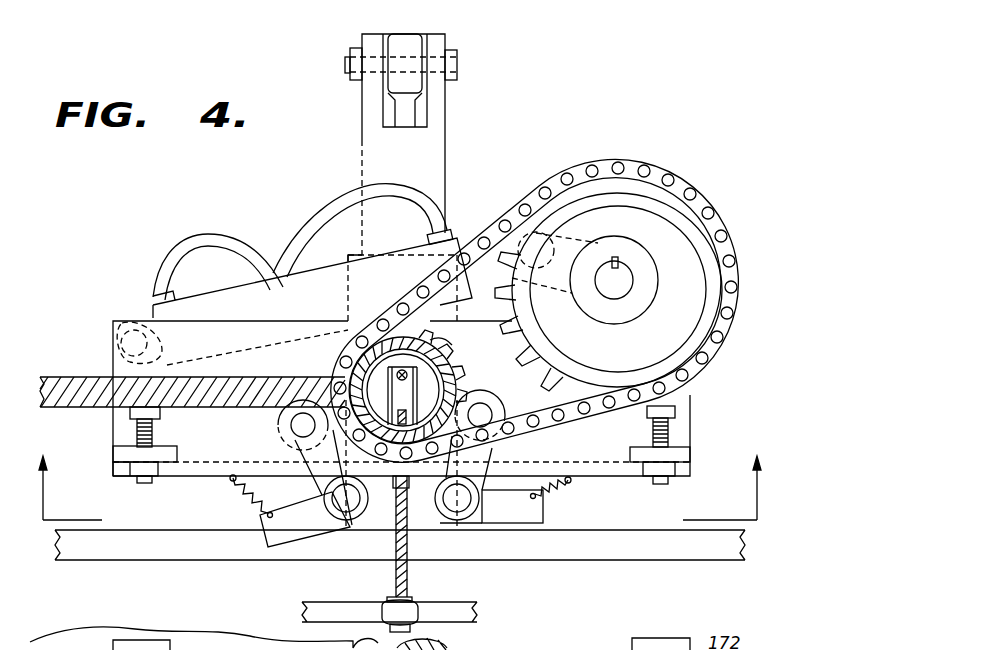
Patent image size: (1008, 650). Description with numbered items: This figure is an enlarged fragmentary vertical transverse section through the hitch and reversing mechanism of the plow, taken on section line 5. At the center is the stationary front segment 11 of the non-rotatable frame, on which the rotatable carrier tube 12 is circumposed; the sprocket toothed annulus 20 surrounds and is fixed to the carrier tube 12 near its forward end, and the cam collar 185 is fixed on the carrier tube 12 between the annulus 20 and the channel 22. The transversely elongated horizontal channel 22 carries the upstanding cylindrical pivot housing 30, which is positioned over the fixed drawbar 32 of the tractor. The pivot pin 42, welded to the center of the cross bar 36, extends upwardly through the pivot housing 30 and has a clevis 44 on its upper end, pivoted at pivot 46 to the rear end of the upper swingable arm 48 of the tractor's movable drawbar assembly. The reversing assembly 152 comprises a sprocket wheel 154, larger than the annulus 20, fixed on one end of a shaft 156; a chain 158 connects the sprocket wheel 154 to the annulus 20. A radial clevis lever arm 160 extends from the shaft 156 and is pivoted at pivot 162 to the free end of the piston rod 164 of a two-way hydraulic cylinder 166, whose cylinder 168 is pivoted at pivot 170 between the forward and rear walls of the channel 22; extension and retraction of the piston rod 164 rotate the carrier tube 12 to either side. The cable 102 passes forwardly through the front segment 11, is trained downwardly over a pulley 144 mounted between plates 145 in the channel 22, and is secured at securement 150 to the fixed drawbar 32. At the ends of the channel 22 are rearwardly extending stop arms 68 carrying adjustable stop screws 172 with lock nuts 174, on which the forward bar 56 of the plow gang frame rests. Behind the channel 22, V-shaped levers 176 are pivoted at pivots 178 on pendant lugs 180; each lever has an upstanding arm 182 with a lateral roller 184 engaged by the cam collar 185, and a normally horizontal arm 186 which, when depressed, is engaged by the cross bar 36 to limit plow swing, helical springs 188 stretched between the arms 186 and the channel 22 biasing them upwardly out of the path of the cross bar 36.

The clevis 44 is at (372, 34).
The upper swingable arm 48 is at (407, 40).
The pivot 46 is at (458, 63).
The pivot pin 42 is at (362, 143).
The two-way hydraulic cylinder 166 is at (336, 263).
The cylinder 168 is at (237, 292).
The pivot housing 30 is at (372, 256).
The channel 22 is at (105, 364).
The pivot 170 is at (137, 330).
The plates 145 is at (345, 343).
The forward bar 56 is at (45, 377).
The sprocket wheel 154 is at (700, 205).
The shaft 156 is at (632, 282).
The pivot 162 is at (560, 232).
The radial clevis lever arm 160 is at (585, 245).
The piston rod 164 is at (492, 286).
The reversing assembly 152 is at (504, 192).
The chain 158 is at (480, 236).
The cam collar 185 is at (350, 330).
The sprocket toothed annulus 20 is at (455, 340).
The carrier tube 12 is at (458, 358).
The front segment 11 is at (462, 378).
The pulley 144 is at (409, 392).
The lateral rollers 184 is at (292, 420).
The upstanding arms 182 is at (312, 470).
The V-shaped levers 176 is at (293, 460).
The stop screws 172 is at (160, 438).
The stop arms 68 is at (118, 455).
The lock nuts 174 is at (165, 478).
The helical springs 188 is at (248, 496).
The normally horizontal arms 186 is at (275, 548).
The pivot 178 is at (348, 522).
The pendant lugs 180 is at (413, 485).
The cable 102 is at (407, 577).
The cross bar 36 is at (630, 562).
The fixed drawbar 32 is at (471, 604).
The cable securement 150 is at (388, 626).
The section line 5 is at (411, 488).